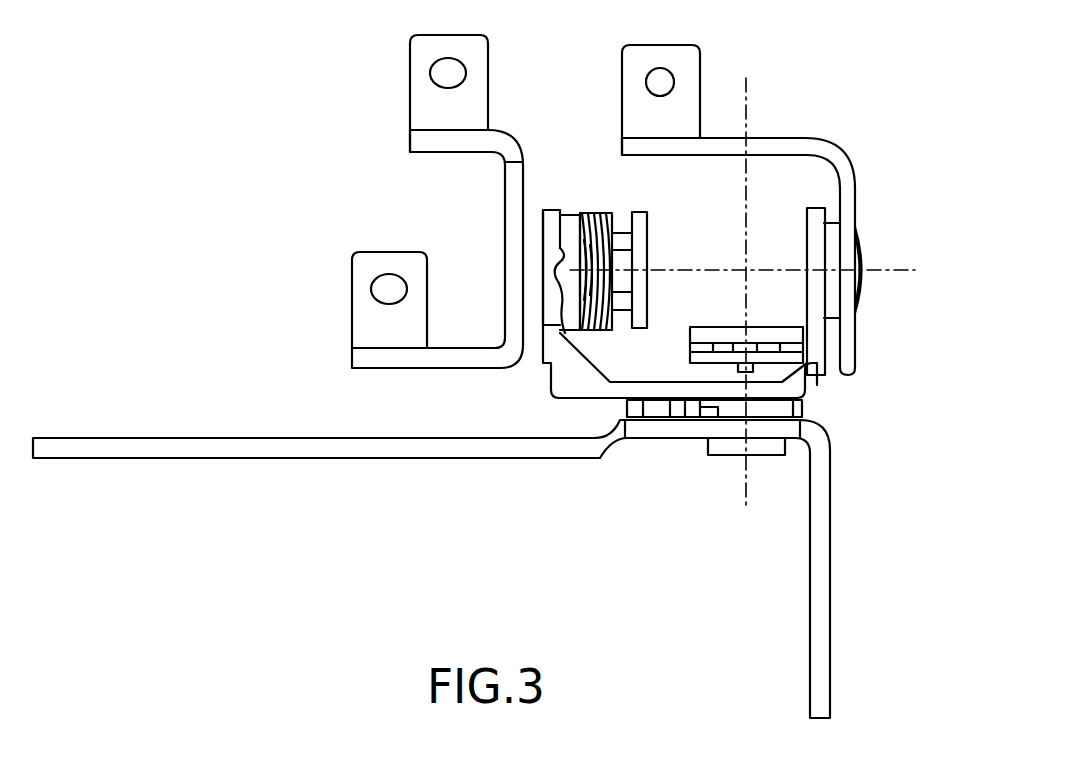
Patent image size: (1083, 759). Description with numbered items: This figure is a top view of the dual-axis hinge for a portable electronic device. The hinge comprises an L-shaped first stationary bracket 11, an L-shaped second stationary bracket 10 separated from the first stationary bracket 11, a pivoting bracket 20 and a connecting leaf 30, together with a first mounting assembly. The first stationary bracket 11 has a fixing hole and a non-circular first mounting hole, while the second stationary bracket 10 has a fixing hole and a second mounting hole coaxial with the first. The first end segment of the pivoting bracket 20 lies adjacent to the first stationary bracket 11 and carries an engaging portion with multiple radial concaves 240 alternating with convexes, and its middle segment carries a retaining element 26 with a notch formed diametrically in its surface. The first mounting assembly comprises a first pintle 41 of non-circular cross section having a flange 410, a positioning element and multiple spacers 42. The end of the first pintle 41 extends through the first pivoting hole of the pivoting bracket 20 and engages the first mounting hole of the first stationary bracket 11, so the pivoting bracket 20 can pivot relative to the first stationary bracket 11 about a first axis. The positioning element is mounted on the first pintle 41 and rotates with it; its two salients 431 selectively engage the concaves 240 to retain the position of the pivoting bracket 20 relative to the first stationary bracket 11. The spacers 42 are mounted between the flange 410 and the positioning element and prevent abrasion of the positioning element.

The second stationary bracket 10 is at (805, 143).
The first stationary bracket 11 is at (397, 360).
The pivoting bracket 20 is at (802, 385).
The retaining element 26 is at (687, 382).
The connecting leaf 30 is at (440, 457).
The first pintle 41 is at (628, 282).
The spacers 42 is at (598, 215).
The radial concaves 240 is at (560, 273).
The flange 410 is at (640, 255).
The salients 431 is at (567, 253).